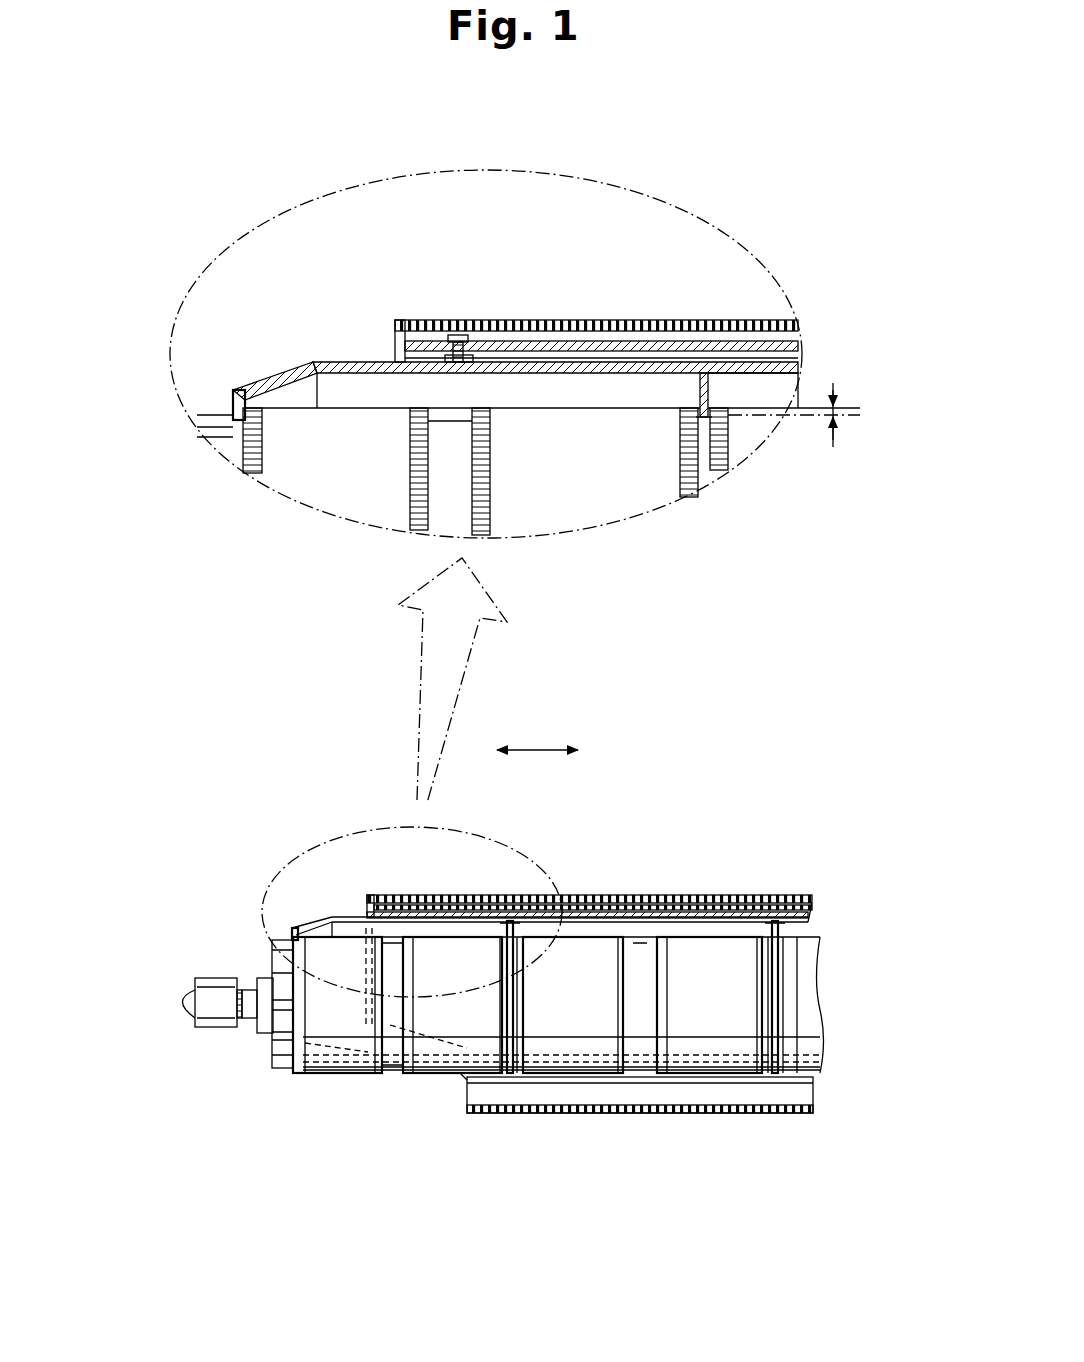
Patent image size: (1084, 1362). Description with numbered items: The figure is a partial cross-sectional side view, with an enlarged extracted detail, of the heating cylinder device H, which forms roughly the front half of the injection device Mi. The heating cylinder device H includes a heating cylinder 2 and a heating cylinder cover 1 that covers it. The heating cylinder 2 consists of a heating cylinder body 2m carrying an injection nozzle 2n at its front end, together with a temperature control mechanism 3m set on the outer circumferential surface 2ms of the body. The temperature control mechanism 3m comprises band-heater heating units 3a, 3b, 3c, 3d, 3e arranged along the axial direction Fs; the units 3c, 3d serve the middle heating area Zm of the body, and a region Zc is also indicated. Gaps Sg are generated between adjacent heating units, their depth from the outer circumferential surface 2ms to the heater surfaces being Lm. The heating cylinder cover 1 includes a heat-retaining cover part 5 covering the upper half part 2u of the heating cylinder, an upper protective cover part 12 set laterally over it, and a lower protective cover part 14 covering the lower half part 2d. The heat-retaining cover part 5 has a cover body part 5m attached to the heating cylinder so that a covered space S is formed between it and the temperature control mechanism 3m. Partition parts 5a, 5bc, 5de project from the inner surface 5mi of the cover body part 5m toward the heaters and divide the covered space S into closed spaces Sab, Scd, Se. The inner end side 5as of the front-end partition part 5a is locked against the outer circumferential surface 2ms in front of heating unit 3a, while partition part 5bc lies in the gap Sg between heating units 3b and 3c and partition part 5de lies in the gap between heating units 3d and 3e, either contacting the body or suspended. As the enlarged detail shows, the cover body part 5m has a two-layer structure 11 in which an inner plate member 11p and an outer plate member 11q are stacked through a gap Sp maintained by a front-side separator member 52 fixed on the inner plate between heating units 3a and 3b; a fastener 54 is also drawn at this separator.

The heating cylinder cover 1 is at (655, 240).
The heating cylinder 2 is at (400, 398).
The heating cylinder body 2m is at (453, 478).
The outer circumferential surface 2ms is at (237, 453).
The upper half part 2u is at (238, 943).
The lower half part 2d is at (247, 1062).
The injection nozzle 2n is at (188, 1003).
The heating unit 3a is at (293, 468).
The heating unit 3b is at (585, 493).
The heating unit 3c is at (743, 440).
The heating unit 3d is at (715, 1077).
The heating unit 3e is at (800, 1077).
The temperature control mechanism 3m is at (586, 393).
The heat-retaining cover part 5 is at (348, 925).
The front-end partition part 5a is at (230, 402).
The inner end side 5as is at (227, 420).
The partition part 5bc is at (697, 387).
The partition part 5de is at (758, 930).
The cover body part 5m is at (582, 893).
The inner surface 5mi is at (387, 900).
The multi-layer structure 11 is at (632, 335).
The inner plate member 11p is at (502, 338).
The outer plate member 11q is at (532, 340).
The upper protective cover part 12 is at (680, 325).
The lower protective cover part 14 is at (763, 1114).
The front-side separator member 52 is at (443, 357).
The bolt 54 is at (458, 340).
The heating cylinder device H is at (315, 250).
The covered space S is at (358, 390).
The closed space Sab is at (545, 390).
The closed space Scd is at (773, 387).
The gap Sp is at (718, 356).
The gap Sg is at (703, 467).
The closed space Se is at (785, 930).
The depth Lm is at (835, 429).
The axial direction Fs is at (537, 750).
The middle heating area Zm is at (497, 1087).
The zone Zc is at (678, 1087).